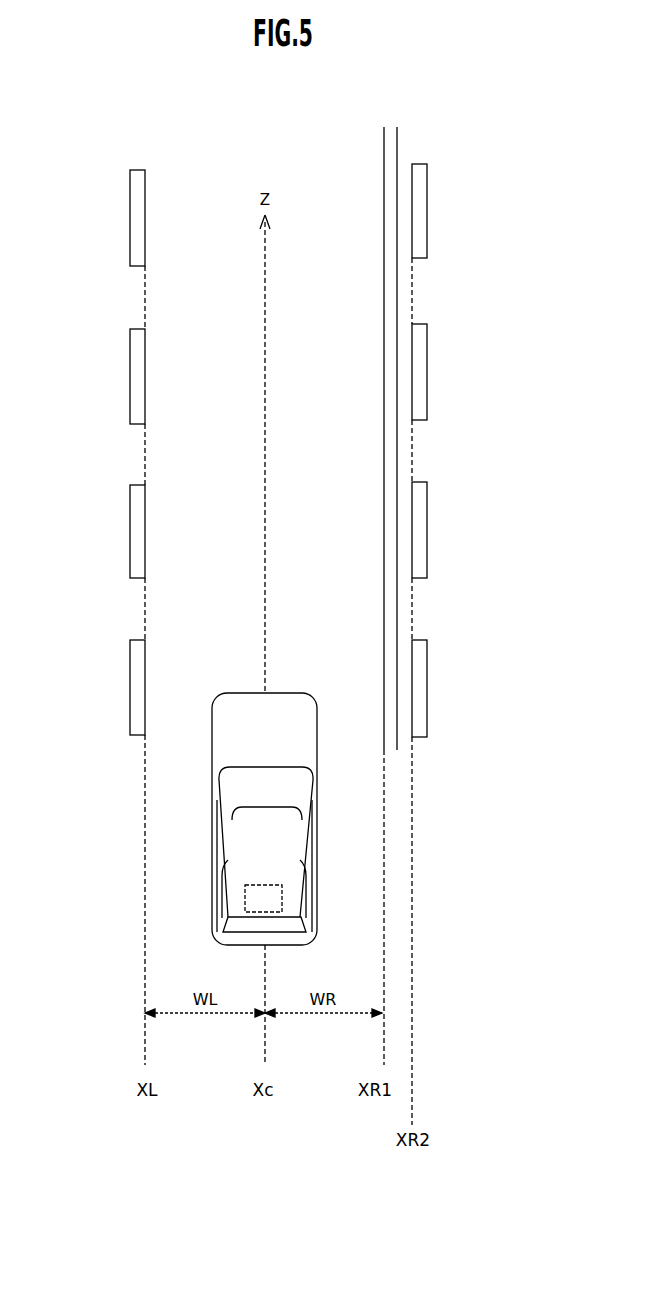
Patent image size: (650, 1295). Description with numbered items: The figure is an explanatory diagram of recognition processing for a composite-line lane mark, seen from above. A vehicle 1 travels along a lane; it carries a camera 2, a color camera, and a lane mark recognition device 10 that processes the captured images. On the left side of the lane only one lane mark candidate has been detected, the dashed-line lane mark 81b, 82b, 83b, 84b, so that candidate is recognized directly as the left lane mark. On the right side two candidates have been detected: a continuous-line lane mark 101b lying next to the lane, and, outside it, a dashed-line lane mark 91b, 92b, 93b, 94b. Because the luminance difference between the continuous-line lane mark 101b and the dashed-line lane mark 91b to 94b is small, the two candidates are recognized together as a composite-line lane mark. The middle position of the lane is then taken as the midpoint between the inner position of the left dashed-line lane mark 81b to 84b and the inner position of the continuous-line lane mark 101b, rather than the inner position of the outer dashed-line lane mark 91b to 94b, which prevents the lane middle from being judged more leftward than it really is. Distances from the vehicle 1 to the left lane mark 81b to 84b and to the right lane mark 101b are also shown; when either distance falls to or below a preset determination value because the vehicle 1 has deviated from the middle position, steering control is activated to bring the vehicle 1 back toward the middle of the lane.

The vehicle 1 is at (283, 868).
The camera 2 is at (262, 800).
The lane mark recognition device 10 is at (245, 884).
The dashed-line lane mark 81b is at (130, 686).
The dashed-line lane mark 82b is at (130, 530).
The dashed-line lane mark 83b is at (130, 370).
The dashed-line lane mark 84b is at (130, 217).
The dashed-line lane mark 91b is at (427, 682).
The dashed-line lane mark 92b is at (427, 522).
The dashed-line lane mark 93b is at (427, 365).
The dashed-line lane mark 94b is at (427, 205).
The continuous-line lane mark 101b is at (384, 512).